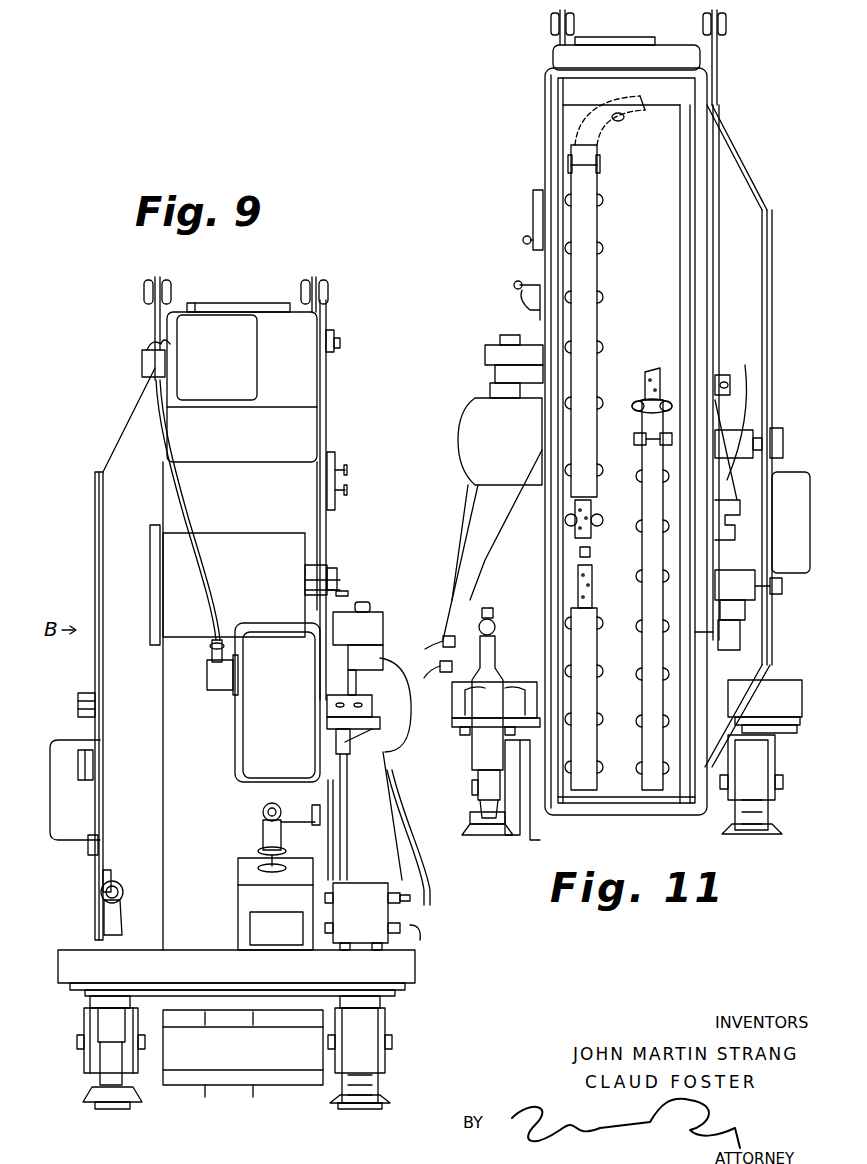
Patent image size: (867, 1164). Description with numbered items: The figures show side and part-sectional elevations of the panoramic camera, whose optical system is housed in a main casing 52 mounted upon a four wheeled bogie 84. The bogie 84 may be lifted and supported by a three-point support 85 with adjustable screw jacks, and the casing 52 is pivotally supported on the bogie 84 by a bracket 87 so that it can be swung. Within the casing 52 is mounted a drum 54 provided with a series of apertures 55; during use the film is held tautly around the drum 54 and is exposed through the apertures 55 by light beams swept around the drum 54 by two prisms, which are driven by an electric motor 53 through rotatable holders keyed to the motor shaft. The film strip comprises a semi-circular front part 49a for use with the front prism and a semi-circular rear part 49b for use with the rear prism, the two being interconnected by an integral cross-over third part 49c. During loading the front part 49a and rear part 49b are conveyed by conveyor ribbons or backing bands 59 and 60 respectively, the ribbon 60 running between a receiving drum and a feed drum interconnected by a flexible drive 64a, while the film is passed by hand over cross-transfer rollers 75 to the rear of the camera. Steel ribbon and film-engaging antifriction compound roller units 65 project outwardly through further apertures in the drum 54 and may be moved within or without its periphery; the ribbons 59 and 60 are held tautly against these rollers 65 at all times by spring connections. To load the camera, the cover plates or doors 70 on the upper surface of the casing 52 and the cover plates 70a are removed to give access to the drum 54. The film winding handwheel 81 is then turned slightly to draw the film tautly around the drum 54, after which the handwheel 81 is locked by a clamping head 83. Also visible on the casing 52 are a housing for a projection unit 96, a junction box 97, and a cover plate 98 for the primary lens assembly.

In FIG. 9, the cover plates or doors 70 is at (200, 331).
In FIG. 11, the cover plates or doors 70 is at (618, 44).
In FIG. 9, the cover plates 70a is at (252, 720).
In FIG. 9, the flexible drive 64a is at (155, 418).
In FIG. 9, the clamping head 83 is at (322, 577).
In FIG. 9, the film winding handwheel 81 is at (346, 593).
In FIG. 9, the electric motor 53 is at (399, 668).
In FIG. 11, the electric motor 53 is at (463, 406).
In FIG. 9, the cover plate for the primary lens assembly 98 is at (48, 743).
In FIG. 9, the main casing 52 is at (122, 860).
In FIG. 11, the main casing 52 is at (750, 222).
In FIG. 9, the four wheeled bogie 84 is at (58, 961).
In FIG. 11, the four wheeled bogie 84 is at (788, 690).
In FIG. 9, the junction box 97 is at (238, 898).
In FIG. 9, the housing for a projection unit 96 is at (378, 915).
In FIG. 9, the three-point support 85 is at (85, 1104).
In FIG. 11, the three-point support 85 is at (478, 838).
In FIG. 11, the drum 54 is at (660, 197).
In FIG. 11, the front part of the film 49a is at (665, 374).
In FIG. 11, the rear part of the film 49b is at (571, 528).
In FIG. 11, the cross-over third part of the film 49c is at (614, 104).
In FIG. 11, the cross-transfer rollers 75 is at (624, 120).
In FIG. 11, the conveyor ribbon or backing band 60 is at (580, 432).
In FIG. 11, the conveyor ribbon or backing band 59 is at (650, 456).
In FIG. 11, the bracket 87 is at (455, 538).
In FIG. 11, the apertures 55 is at (592, 553).
In FIG. 11, the compound roller units 65 is at (600, 628).